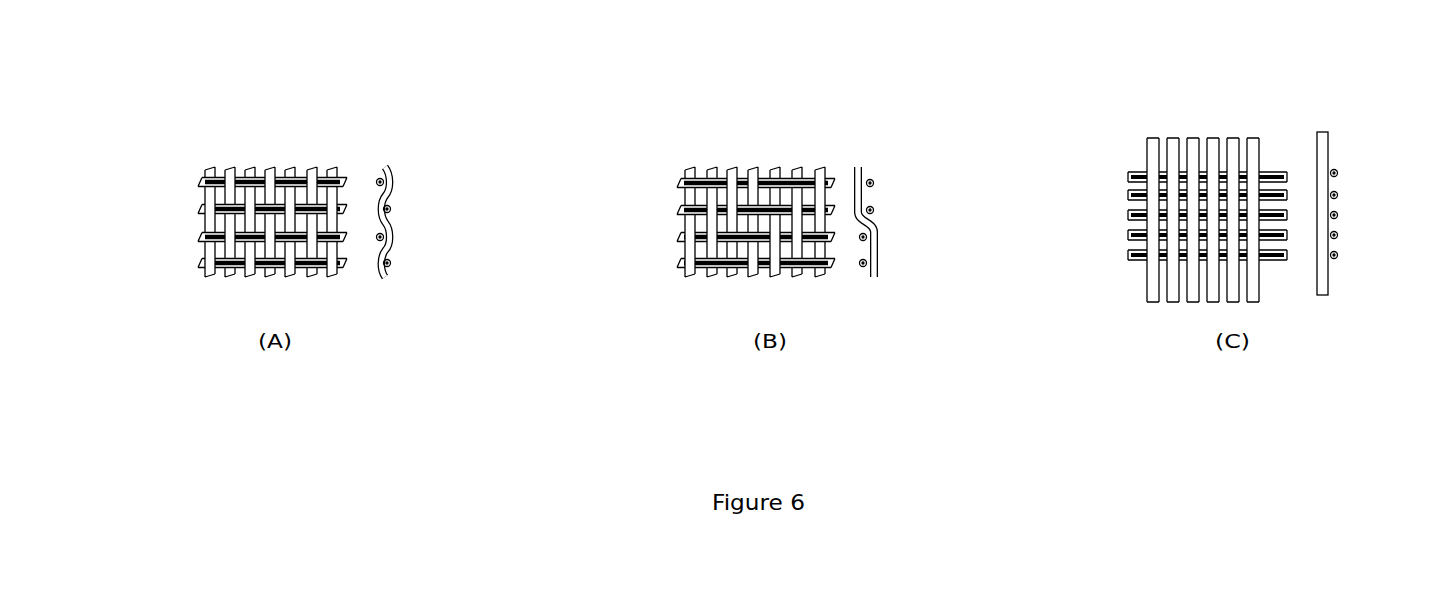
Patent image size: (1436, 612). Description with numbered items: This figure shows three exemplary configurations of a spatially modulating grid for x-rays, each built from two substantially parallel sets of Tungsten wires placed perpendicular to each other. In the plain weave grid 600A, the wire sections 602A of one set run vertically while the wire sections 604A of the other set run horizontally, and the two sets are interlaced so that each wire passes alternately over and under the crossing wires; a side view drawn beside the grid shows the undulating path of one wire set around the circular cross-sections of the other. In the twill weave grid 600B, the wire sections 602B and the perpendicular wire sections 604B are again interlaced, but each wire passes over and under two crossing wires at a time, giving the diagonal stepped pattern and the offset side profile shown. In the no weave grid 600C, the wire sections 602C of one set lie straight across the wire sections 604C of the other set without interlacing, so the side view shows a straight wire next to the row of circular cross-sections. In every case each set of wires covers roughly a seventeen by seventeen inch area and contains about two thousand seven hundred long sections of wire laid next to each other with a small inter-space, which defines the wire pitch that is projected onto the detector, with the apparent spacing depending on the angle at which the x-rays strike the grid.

In FIG. 6A, the grid 600A is at (285, 187).
In FIG. 6A, the wire section 602A is at (314, 243).
In FIG. 6A, the wire section 604A is at (226, 212).
In FIG. 6B, the grid 600B is at (763, 187).
In FIG. 6B, the wire section 602B is at (796, 243).
In FIG. 6B, the wire section 604B is at (709, 212).
In FIG. 6C, the grid 600C is at (1211, 192).
In FIG. 6C, the wire section 602C is at (1245, 233).
In FIG. 6C, the wire section 604C is at (1162, 206).